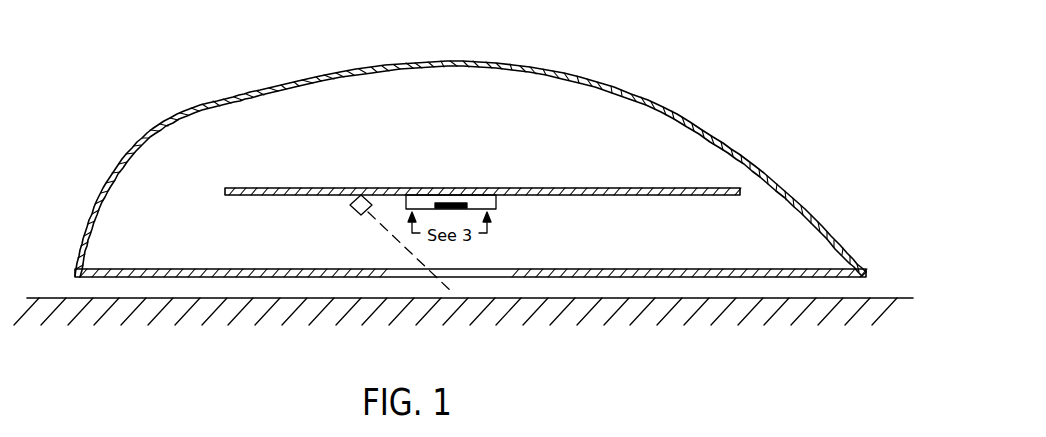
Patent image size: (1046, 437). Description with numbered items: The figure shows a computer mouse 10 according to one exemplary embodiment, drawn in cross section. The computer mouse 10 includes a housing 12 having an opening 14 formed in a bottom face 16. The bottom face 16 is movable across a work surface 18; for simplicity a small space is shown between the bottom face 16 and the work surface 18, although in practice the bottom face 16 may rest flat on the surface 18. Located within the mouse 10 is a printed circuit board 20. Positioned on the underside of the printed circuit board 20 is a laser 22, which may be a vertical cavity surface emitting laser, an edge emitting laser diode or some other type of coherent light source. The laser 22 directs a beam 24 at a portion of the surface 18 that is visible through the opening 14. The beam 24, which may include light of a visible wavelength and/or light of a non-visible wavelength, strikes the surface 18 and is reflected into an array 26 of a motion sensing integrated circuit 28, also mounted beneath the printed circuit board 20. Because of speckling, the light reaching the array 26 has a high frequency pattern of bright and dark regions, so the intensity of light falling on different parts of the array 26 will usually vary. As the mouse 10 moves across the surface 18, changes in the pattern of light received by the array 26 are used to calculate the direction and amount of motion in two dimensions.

The computer mouse 10 is at (148, 107).
The housing 12 is at (683, 118).
The opening 14 is at (512, 278).
The bottom face 16 is at (848, 277).
The work surface 18 is at (712, 298).
The printed circuit board 20 is at (243, 188).
The laser 22 is at (352, 208).
The beam 24 is at (398, 242).
The array 26 is at (444, 203).
The motion sensing integrated circuit 28 is at (497, 203).